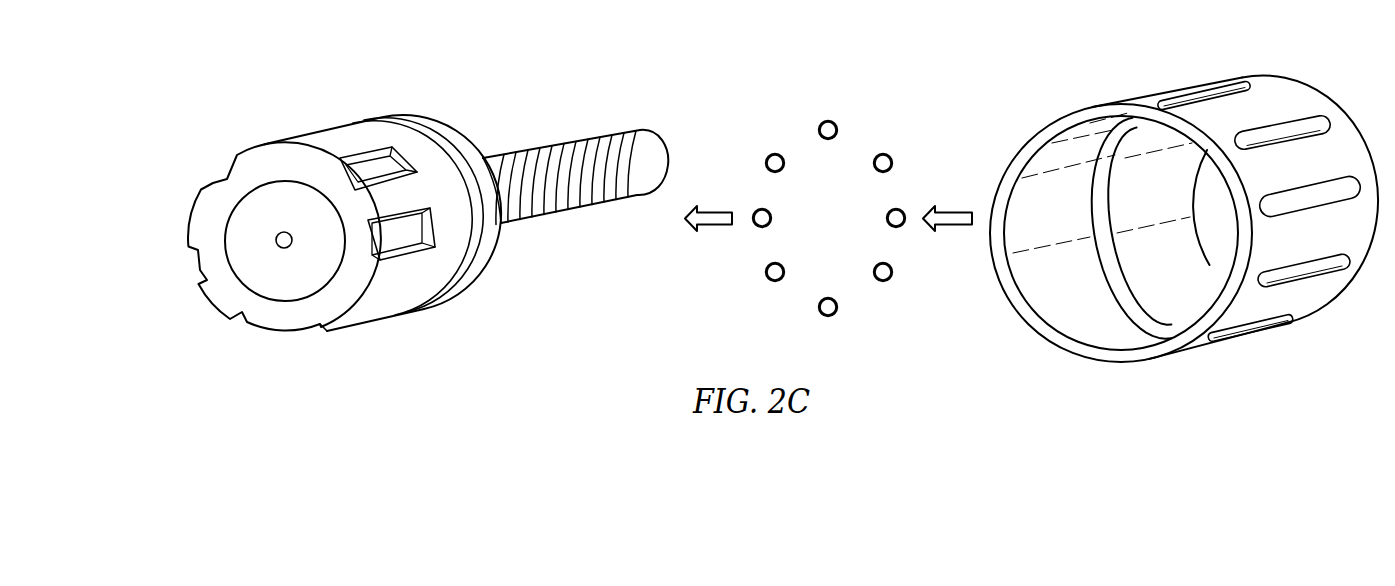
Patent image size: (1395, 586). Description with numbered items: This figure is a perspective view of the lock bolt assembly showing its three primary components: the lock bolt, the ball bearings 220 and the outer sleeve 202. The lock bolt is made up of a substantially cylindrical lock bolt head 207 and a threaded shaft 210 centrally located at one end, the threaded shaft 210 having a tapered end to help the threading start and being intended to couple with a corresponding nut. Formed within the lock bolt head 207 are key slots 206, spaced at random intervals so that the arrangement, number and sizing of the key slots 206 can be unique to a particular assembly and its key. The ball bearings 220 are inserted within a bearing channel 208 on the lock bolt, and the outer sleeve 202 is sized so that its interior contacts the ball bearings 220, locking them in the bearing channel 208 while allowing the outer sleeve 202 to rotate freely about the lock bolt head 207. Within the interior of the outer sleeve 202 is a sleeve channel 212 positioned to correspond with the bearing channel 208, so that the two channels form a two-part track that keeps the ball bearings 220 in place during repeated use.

The outer sleeve 202 is at (1306, 85).
The key slots 206 is at (224, 178).
The lock bolt head 207 is at (263, 233).
The bearing channel 208 is at (380, 120).
The threaded shaft 210 is at (540, 147).
The sleeve channel 212 is at (1113, 263).
The ball bearings 220 is at (831, 120).